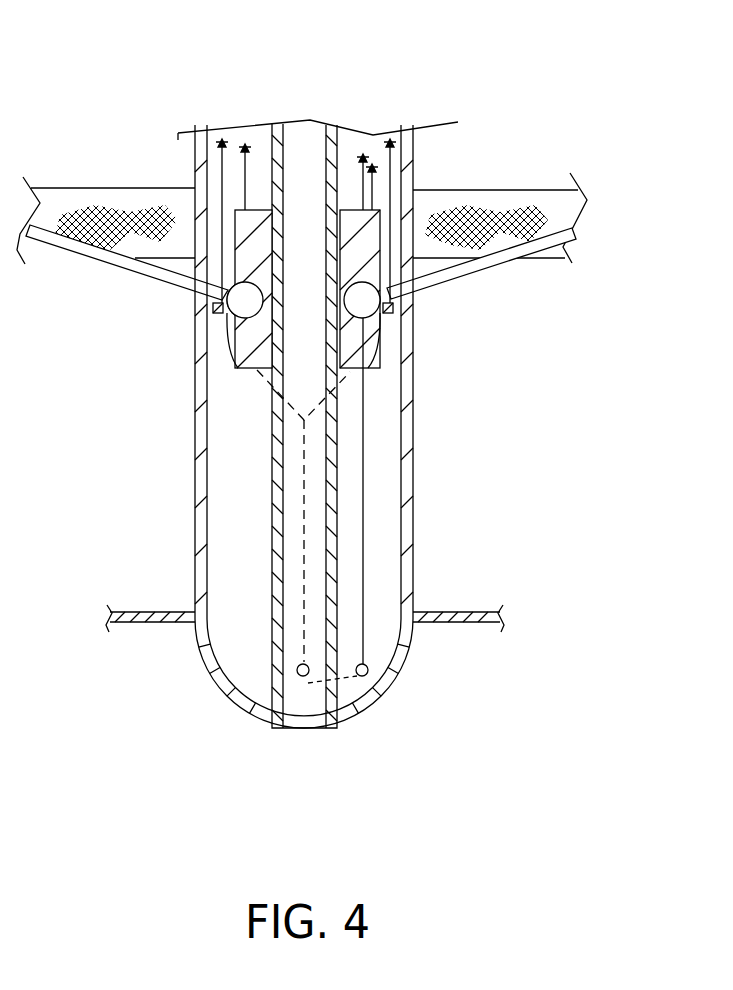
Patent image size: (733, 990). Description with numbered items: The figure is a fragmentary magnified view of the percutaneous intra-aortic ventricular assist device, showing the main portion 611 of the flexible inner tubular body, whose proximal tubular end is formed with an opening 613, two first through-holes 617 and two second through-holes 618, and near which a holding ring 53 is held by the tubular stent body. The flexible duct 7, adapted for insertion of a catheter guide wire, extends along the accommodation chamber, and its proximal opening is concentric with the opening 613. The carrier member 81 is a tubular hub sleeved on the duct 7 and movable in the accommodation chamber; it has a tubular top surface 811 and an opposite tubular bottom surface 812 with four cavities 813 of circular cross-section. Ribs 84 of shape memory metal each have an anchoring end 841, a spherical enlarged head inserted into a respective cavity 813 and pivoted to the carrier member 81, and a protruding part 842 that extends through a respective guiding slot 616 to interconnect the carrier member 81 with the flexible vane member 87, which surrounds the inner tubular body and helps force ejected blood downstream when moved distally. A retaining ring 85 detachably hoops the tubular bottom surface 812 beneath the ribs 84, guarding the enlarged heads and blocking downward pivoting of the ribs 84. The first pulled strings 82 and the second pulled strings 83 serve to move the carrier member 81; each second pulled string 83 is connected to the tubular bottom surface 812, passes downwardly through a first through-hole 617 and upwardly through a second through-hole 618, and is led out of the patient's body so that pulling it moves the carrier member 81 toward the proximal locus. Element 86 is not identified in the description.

The flexible duct 7 is at (303, 155).
The holding ring 53 is at (413, 623).
The carrier member 81 is at (256, 183).
The first pulled strings 82 is at (227, 160).
The second pulled strings 83 is at (365, 530).
The ribs 84 is at (105, 262).
The retaining ring 85 is at (215, 322).
The top plate 86 is at (196, 170).
The vane member 87 is at (495, 207).
The main portion 611 is at (413, 372).
The opening 613 is at (260, 718).
The guiding slots 616 is at (210, 183).
The first through-holes 617 is at (304, 680).
The second through-holes 618 is at (367, 675).
The tubular top surface 811 is at (200, 183).
The tubular bottom surface 812 is at (232, 347).
The cavities 813 is at (247, 352).
The anchoring end 841 is at (387, 292).
The protruding part 842 is at (560, 233).